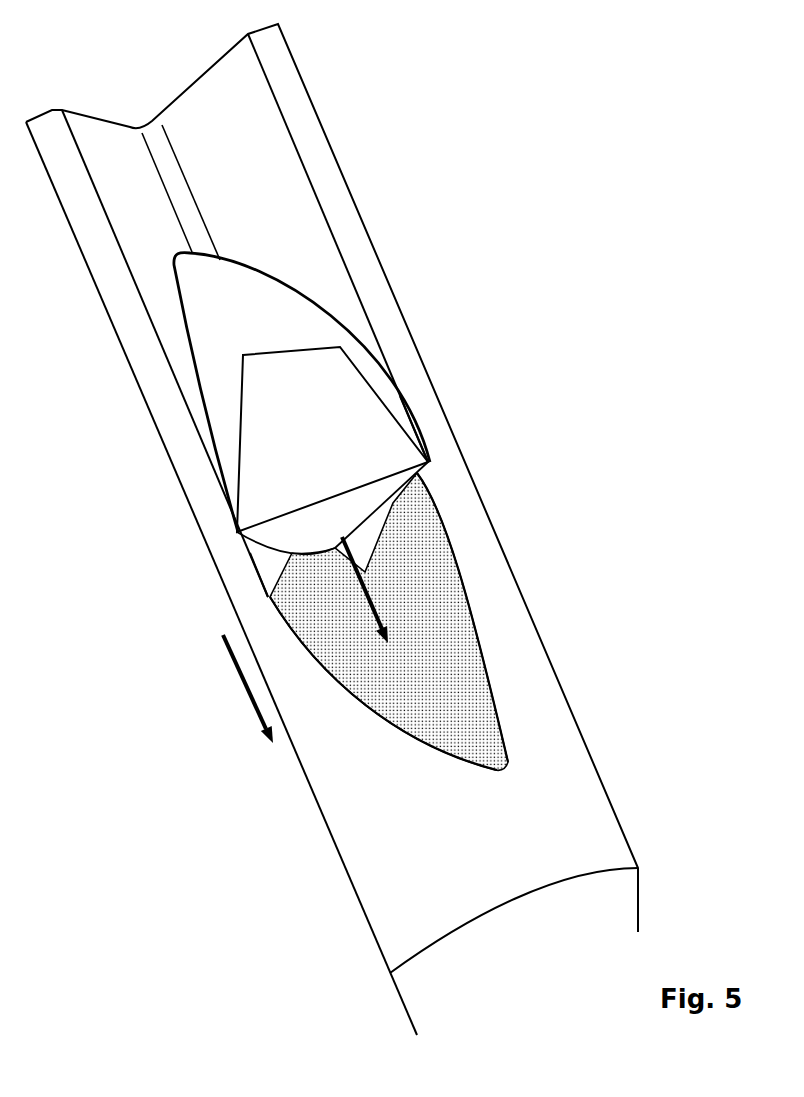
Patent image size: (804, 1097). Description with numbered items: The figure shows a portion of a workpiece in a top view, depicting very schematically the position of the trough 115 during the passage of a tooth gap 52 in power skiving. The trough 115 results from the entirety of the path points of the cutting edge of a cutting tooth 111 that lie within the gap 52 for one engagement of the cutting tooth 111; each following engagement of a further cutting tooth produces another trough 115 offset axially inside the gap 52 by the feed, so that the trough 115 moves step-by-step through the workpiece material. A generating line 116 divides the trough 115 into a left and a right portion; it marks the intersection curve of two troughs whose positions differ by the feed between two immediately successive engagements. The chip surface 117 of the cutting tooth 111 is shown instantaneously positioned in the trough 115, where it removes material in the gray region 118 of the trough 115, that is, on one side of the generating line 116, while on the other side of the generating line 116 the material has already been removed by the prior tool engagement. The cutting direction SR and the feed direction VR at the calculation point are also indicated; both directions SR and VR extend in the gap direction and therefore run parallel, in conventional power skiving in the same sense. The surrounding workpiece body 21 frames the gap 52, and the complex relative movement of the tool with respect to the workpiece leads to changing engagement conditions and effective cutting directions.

The tube 21 is at (328, 168).
The tooth gap 52 is at (121, 134).
The cutting tooth 111 is at (363, 375).
The trough 115 is at (488, 650).
The generating line 116 is at (418, 428).
The chip surface 117 is at (413, 473).
The gray region 118 is at (438, 573).
The cutting direction SR is at (379, 590).
The feed direction VR is at (247, 689).